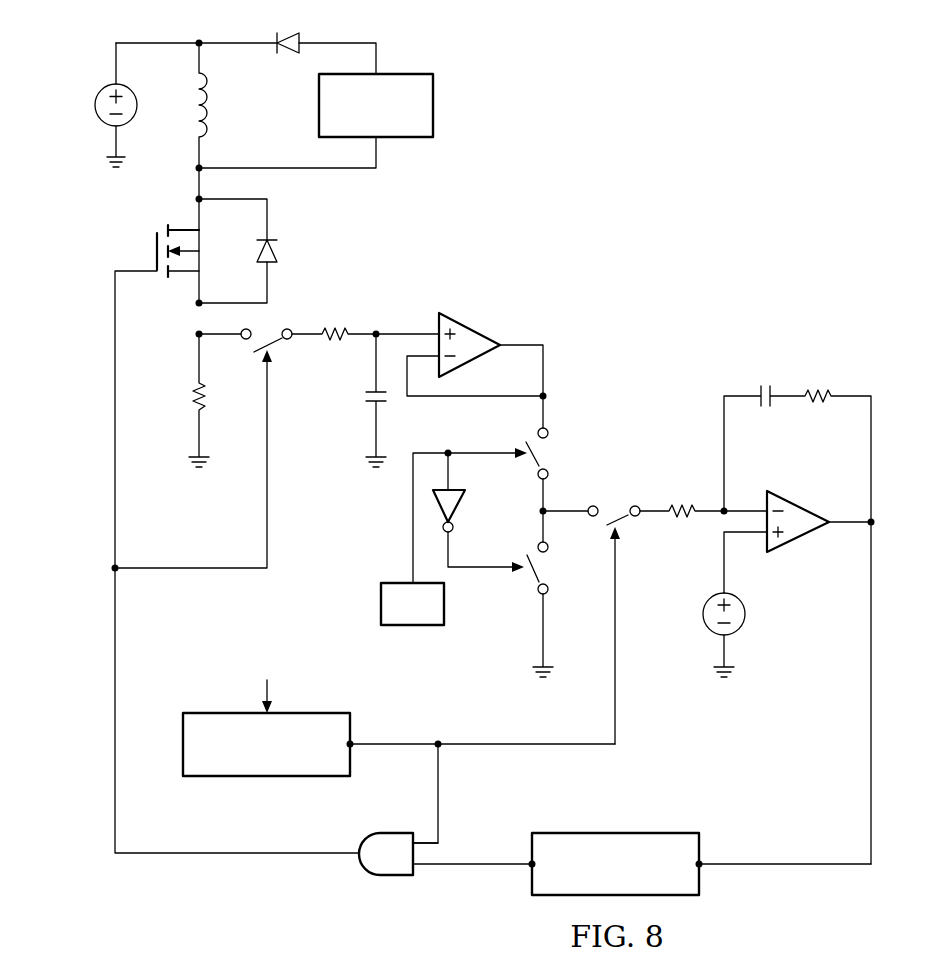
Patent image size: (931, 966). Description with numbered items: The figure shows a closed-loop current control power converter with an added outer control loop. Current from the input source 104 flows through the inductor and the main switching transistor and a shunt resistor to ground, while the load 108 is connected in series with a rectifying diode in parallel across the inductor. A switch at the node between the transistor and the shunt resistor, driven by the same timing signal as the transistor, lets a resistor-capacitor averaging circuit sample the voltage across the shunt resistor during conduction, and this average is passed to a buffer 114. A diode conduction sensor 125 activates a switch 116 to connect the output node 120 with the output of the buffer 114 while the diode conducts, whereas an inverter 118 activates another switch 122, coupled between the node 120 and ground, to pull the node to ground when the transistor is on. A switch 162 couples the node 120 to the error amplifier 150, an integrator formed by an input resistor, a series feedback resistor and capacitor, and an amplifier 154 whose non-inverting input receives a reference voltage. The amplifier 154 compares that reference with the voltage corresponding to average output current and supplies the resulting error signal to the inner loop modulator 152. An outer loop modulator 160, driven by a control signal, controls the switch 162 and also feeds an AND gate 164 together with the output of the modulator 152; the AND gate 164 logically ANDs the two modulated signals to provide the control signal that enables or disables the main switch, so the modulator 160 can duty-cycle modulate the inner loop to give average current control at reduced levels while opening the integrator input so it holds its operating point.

The input source 104 is at (95, 106).
The load 108 is at (398, 74).
The buffer 114 is at (471, 323).
The switch 116 is at (540, 460).
The inverter 118 is at (466, 505).
The output node 120 is at (548, 500).
The switch 122 is at (530, 575).
The diode conduction sensor 125 is at (381, 608).
The error amplifier 150 is at (731, 575).
The modulator 152 is at (702, 878).
The amplifier 154 is at (798, 540).
The modulator 160 is at (247, 777).
The switch 162 is at (628, 519).
The AND gate 164 is at (382, 876).